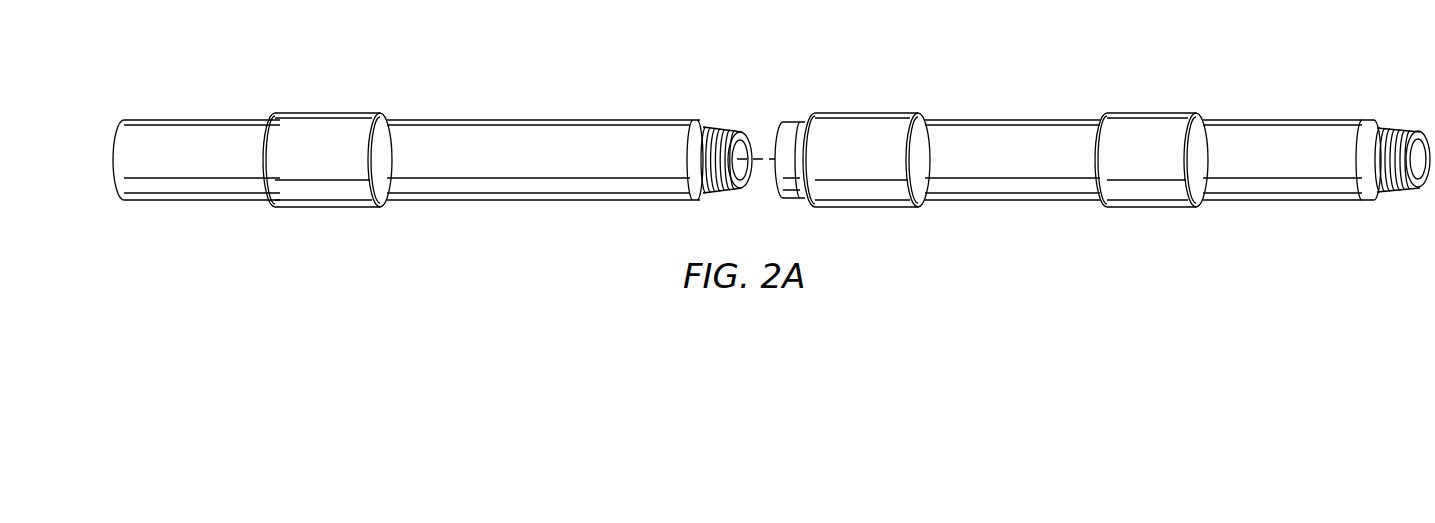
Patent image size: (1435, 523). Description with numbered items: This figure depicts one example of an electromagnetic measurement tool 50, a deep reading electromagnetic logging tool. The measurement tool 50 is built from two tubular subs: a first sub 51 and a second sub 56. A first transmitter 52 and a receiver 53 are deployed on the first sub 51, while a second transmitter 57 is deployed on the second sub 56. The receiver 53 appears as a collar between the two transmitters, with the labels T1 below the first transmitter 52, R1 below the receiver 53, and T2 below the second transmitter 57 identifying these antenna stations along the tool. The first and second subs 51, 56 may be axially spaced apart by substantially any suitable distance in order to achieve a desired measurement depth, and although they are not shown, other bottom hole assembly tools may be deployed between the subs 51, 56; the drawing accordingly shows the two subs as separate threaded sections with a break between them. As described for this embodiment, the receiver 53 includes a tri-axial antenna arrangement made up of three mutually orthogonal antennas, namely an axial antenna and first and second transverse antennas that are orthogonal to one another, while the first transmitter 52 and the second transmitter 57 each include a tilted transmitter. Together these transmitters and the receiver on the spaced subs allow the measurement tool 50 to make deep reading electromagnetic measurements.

The electromagnetic measurement tool 50 is at (478, 90).
The first sub 51 is at (1295, 118).
The first transmitter 52 is at (1172, 112).
The receiver 53 is at (878, 112).
The second sub 56 is at (188, 119).
The second transmitter 57 is at (318, 112).
The threaded connection one T1 is at (1151, 232).
The threaded connection two T2 is at (331, 232).
The receiver one R1 is at (868, 232).